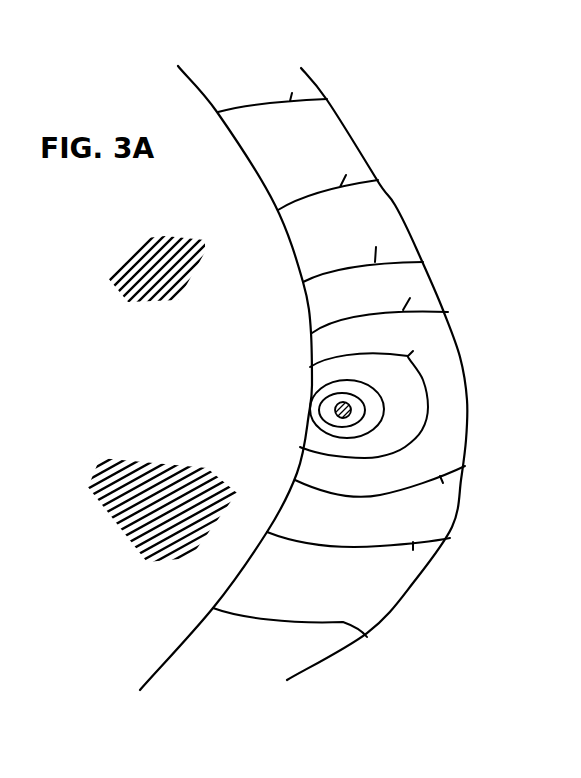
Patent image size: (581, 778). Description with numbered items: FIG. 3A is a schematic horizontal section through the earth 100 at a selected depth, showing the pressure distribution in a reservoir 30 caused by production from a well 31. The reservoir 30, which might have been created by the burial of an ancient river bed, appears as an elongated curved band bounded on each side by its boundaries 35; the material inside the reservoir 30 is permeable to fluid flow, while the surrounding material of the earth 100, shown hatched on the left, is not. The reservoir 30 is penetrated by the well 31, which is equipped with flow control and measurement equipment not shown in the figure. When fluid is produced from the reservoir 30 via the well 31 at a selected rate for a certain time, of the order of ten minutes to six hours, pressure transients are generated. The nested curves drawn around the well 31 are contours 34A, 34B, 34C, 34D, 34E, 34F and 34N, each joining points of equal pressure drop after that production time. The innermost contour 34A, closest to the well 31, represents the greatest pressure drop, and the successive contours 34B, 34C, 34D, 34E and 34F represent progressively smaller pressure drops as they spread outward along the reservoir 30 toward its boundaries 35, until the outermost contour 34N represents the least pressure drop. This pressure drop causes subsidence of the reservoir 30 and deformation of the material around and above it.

The reservoir 30 is at (311, 175).
The well 31 is at (335, 408).
The contour of equal pressure drop 34A is at (318, 397).
The contour of equal pressure drop 34B is at (322, 383).
The contour of equal pressure drop 34C is at (413, 351).
The contour of equal pressure drop 34D is at (410, 298).
The contour of equal pressure drop 34E is at (376, 247).
The contour of equal pressure drop 34F is at (346, 175).
The contour of equal pressure drop 34N is at (292, 93).
The boundaries of reservoir 35 is at (188, 72).
The earth 100 is at (165, 449).